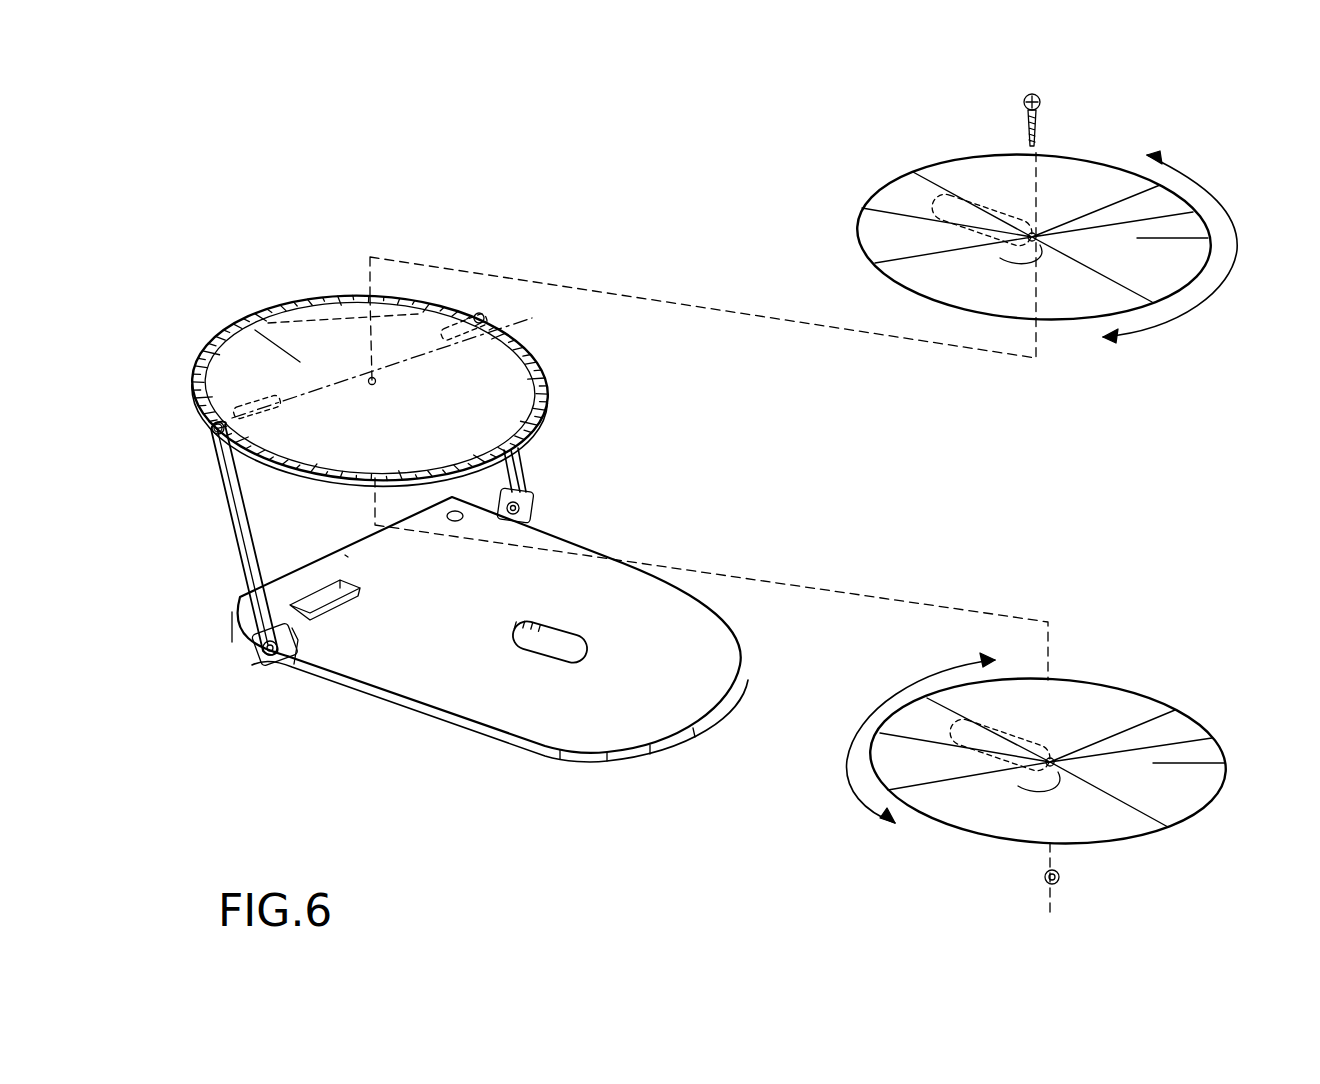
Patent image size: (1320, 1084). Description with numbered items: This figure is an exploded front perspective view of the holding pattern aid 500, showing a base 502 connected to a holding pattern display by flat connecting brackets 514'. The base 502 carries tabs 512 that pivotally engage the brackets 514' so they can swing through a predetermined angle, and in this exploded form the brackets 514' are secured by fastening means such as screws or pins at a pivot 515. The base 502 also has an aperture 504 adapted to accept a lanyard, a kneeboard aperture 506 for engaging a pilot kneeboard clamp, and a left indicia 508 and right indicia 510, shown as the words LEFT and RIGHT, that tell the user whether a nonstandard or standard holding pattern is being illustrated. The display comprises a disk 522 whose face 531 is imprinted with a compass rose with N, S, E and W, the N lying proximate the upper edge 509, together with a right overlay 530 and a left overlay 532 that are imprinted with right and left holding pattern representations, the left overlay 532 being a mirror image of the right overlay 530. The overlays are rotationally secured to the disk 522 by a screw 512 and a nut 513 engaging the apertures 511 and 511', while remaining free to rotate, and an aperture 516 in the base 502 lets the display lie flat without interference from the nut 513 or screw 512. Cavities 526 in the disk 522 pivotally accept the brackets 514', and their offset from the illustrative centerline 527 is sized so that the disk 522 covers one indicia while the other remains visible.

The holding pattern aid 500 is at (195, 230).
The base 502 is at (497, 774).
The aperture 504 is at (455, 510).
The kneeboard aperture 506 is at (310, 600).
The left indicia 508 is at (668, 718).
The upper edge 509 is at (350, 552).
The right indicia 510 is at (445, 570).
The aperture 511 is at (332, 316).
The aperture 511' is at (981, 500).
The screw 512 is at (535, 505).
The nut 513 is at (1062, 874).
The bracket 514' is at (380, 538).
The pivot 515 is at (213, 427).
The aperture 516 is at (565, 635).
The disk 522 is at (540, 420).
The cavity 526 is at (452, 334).
The centerline 527 is at (312, 402).
The right overlay 530 is at (530, 330).
The face 531 is at (445, 413).
The left overlay 532 is at (1150, 692).